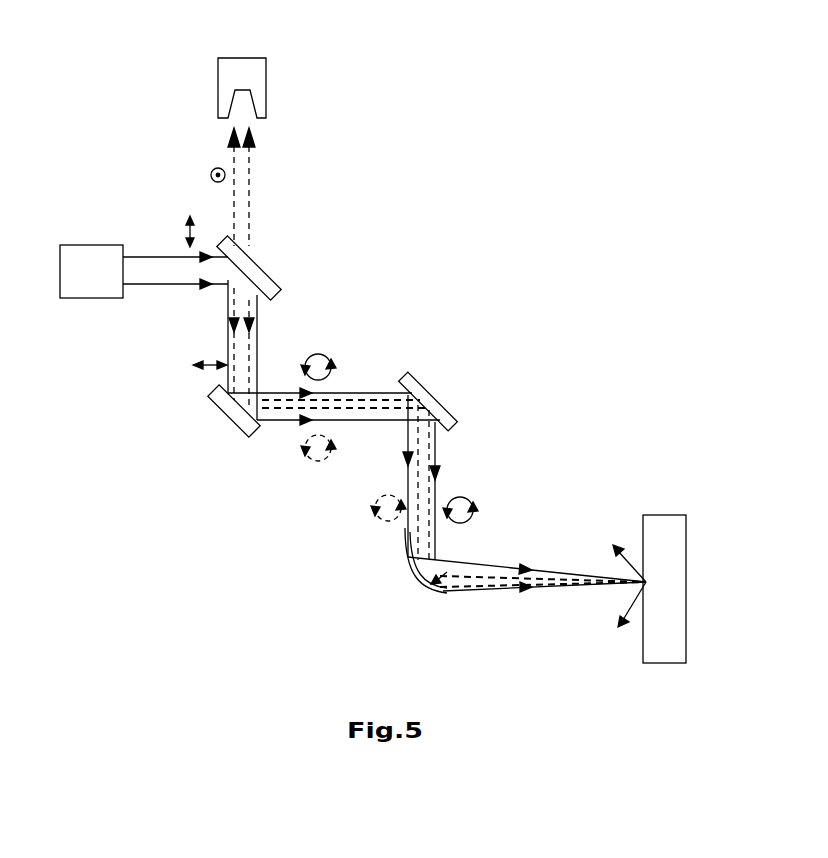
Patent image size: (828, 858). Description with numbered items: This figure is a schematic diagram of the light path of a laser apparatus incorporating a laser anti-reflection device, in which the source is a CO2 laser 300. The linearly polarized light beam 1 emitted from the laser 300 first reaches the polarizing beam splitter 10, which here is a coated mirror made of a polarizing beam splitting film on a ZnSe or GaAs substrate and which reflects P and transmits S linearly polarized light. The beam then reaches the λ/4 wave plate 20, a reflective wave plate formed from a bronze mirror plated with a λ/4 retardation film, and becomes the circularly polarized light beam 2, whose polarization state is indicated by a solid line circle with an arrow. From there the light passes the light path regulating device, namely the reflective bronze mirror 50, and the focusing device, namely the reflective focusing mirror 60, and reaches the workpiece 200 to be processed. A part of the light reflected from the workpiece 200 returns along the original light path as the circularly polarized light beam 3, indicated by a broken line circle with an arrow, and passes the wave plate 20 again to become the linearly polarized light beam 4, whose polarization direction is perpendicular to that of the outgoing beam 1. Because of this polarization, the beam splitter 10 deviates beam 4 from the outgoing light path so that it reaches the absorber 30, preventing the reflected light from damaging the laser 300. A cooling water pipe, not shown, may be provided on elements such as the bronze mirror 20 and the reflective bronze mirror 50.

The CO2 laser 300 is at (82, 262).
The linearly polarized light beam 1 is at (153, 255).
The polarizing beam splitter 10 is at (262, 268).
The linearly polarized light beam 4 is at (230, 308).
The λ/4 wave plate 20 is at (233, 422).
The circularly polarized light beam 2 is at (347, 392).
The circularly polarized light beam 3 is at (357, 410).
The reflective bronze mirror 50 is at (428, 398).
The reflective focusing mirror 60 is at (404, 532).
The workpiece 200 is at (658, 522).
The absorber 30 is at (242, 65).